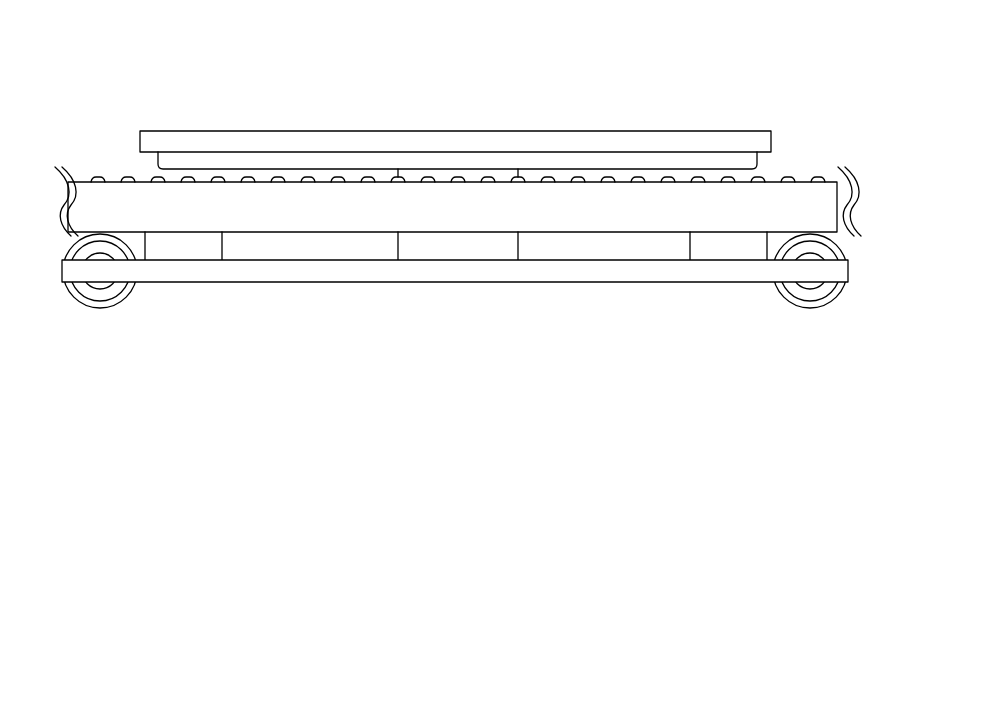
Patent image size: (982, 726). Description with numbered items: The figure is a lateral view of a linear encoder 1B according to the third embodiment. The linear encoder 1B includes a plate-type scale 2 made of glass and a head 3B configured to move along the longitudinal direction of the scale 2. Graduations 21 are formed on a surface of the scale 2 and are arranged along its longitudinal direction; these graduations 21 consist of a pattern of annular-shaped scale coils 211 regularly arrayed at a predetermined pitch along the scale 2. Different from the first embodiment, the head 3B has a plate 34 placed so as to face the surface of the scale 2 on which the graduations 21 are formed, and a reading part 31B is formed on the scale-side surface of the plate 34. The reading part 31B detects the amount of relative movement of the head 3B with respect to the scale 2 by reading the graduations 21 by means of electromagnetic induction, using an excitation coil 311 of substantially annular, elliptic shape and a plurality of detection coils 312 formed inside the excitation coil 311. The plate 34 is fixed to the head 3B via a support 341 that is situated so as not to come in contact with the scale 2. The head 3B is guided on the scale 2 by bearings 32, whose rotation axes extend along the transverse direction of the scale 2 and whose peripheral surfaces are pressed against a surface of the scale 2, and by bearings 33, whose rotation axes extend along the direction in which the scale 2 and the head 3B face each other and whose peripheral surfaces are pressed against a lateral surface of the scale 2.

The linear encoder 1B is at (677, 88).
The scale 2 is at (802, 185).
The graduations 21 is at (428, 137).
The scale coils 211 is at (128, 177).
The excitation coil 311 is at (457, 122).
The detection coils 312 is at (262, 158).
The reading part 31B is at (457, 122).
The plate 34 is at (510, 137).
The support 341 is at (519, 243).
The bearings 33 is at (188, 253).
The head 3B is at (660, 275).
The bearings 32 is at (108, 308).